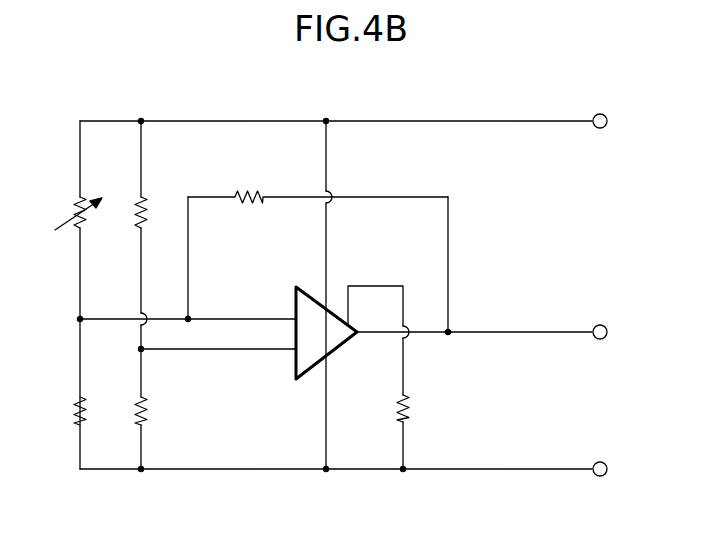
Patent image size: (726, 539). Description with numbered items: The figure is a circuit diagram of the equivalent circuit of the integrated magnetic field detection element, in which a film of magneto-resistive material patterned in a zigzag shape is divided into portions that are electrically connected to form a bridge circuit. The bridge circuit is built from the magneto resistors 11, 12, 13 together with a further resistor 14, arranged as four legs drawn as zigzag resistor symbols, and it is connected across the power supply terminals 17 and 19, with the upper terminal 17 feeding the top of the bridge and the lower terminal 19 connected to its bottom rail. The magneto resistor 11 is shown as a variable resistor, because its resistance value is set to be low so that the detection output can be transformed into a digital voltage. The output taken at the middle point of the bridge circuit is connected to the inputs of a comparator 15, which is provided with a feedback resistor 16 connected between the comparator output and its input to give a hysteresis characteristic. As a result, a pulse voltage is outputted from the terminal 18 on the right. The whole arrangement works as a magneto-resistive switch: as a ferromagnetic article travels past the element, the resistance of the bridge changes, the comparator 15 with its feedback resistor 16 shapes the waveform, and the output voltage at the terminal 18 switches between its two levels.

The magneto resistor 11 is at (76, 215).
The magneto resistor 12 is at (146, 215).
The magneto resistor 13 is at (147, 414).
The resistor 14 is at (75, 410).
The comparator 15 is at (338, 348).
The feedback resistor 16 is at (246, 192).
The power supply terminal 17 is at (607, 121).
The terminal 18 is at (607, 332).
The power supply terminal 19 is at (607, 469).